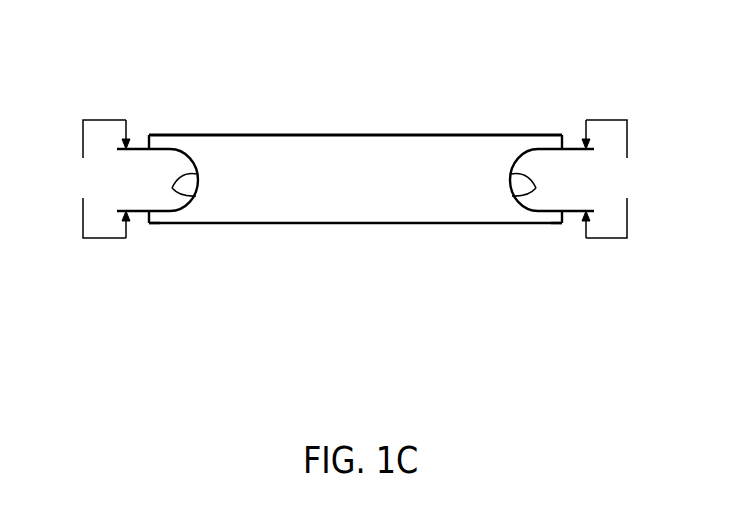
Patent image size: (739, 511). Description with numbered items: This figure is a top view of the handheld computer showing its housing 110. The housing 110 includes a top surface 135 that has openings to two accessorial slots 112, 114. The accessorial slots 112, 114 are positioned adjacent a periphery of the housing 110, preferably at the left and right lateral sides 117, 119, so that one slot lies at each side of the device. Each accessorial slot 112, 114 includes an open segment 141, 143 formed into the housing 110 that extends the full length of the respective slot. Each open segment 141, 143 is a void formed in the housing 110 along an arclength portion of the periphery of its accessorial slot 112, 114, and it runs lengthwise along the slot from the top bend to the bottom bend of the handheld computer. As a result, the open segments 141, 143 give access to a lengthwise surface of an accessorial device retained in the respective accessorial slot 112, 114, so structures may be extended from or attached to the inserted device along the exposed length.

The housing 110 is at (350, 135).
The accessorial slot 112 is at (196, 196).
The accessorial slot 114 is at (512, 196).
The top surface 135 is at (343, 195).
The left lateral side 117 is at (150, 223).
The right lateral side 119 is at (563, 223).
The open segment 141 is at (97, 179).
The open segment 143 is at (617, 179).